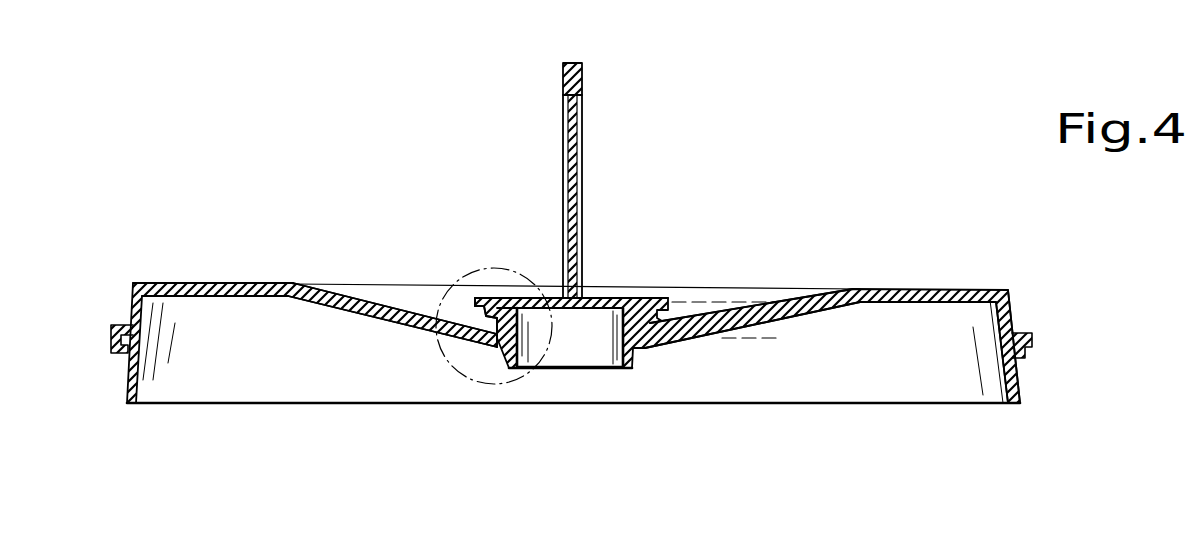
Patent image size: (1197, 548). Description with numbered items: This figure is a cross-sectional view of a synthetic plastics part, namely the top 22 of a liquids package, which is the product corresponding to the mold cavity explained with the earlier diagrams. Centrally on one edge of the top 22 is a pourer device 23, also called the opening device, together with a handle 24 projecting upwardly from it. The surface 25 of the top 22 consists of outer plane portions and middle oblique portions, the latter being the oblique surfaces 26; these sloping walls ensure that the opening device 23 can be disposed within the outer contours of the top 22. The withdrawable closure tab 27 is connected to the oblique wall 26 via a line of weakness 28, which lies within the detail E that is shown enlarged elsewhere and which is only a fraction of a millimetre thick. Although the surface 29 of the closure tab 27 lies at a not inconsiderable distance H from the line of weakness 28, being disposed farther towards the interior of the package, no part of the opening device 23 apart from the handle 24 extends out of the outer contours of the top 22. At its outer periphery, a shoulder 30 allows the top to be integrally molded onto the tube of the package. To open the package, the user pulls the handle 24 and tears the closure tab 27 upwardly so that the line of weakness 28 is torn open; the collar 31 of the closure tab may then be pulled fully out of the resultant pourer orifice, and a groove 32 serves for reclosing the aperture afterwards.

The top 22 is at (915, 278).
The pourer device 23 is at (582, 280).
The handle 24 is at (582, 117).
The surface 25 is at (212, 287).
The oblique surface 26 is at (379, 310).
The withdrawable tab 27 is at (533, 298).
The line of weakness 28 is at (500, 340).
The surface of the closure tab 29 is at (508, 299).
The shoulder 30 is at (1005, 328).
The collar 31 is at (530, 335).
The groove 32 is at (477, 299).
The detail E is at (463, 378).
The distance H is at (758, 338).